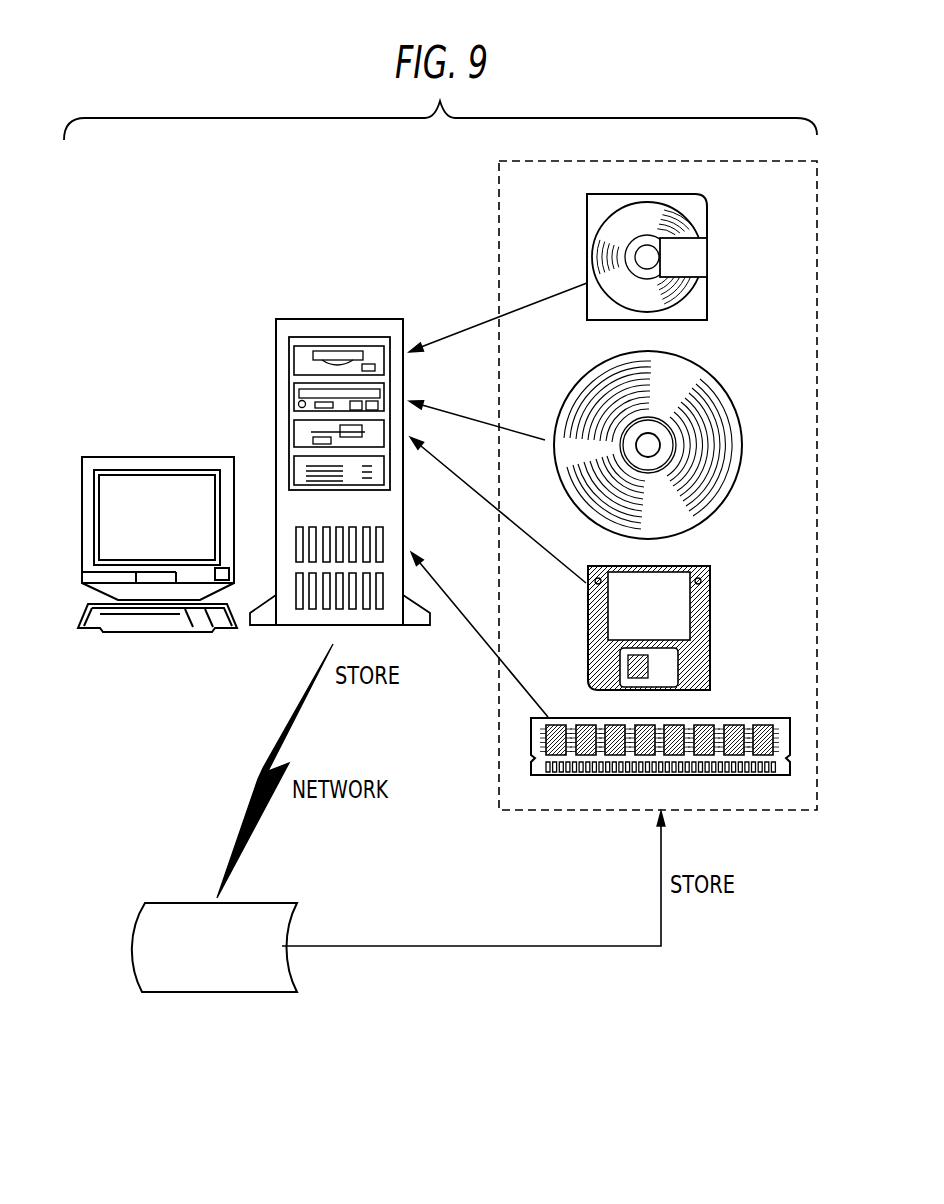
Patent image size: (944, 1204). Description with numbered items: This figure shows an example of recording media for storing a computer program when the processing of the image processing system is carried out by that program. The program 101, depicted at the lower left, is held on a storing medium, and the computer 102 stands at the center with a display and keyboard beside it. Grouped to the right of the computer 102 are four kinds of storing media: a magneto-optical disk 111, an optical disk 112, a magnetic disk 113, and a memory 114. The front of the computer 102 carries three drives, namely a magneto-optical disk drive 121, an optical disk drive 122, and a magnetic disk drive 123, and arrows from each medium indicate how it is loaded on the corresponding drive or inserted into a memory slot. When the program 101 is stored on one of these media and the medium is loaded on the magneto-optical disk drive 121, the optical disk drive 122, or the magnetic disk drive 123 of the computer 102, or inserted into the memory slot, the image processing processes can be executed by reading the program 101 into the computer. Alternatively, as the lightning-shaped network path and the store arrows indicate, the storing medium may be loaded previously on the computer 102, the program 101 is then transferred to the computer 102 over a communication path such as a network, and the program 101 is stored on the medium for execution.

The program 101 is at (130, 949).
The computer 102 is at (338, 318).
The magneto-optical disk 111 is at (707, 228).
The optical disk 112 is at (742, 438).
The magnetic disk 113 is at (710, 626).
The memory 114 is at (740, 717).
The magneto-optical disk drive 121 is at (294, 359).
The optical disk drive 122 is at (294, 399).
The magnetic disk drive 123 is at (294, 435).